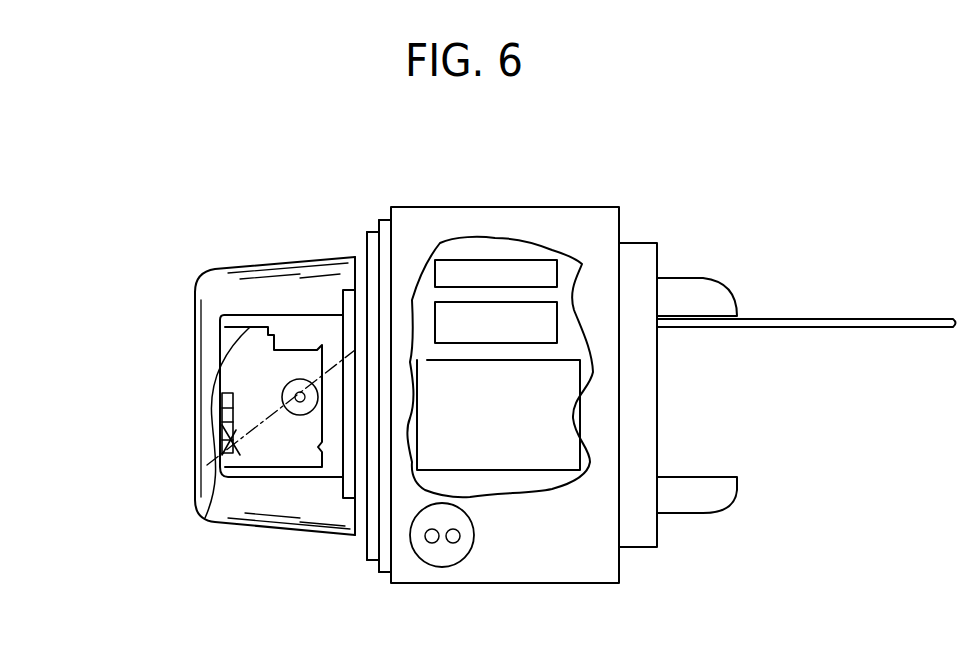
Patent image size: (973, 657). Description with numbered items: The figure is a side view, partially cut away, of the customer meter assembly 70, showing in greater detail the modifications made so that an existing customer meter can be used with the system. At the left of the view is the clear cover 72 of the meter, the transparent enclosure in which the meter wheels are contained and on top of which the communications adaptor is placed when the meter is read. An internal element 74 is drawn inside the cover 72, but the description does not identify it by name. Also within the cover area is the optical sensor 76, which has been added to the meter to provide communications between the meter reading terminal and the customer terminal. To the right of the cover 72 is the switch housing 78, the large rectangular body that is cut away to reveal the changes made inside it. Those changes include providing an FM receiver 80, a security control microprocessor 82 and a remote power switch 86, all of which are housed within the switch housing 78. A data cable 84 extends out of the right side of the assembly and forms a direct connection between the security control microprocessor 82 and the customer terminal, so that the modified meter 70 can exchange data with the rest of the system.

The customer meter assembly 70 is at (352, 193).
The clear cover 72 is at (200, 268).
The plunger assembly 74 is at (243, 453).
The optical sensor 76 is at (225, 432).
The switch housing 78 is at (467, 207).
The FM receiver 80 is at (548, 270).
The security control microprocessor 82 is at (548, 308).
The data cable 84 is at (848, 318).
The remote power switch 86 is at (585, 470).